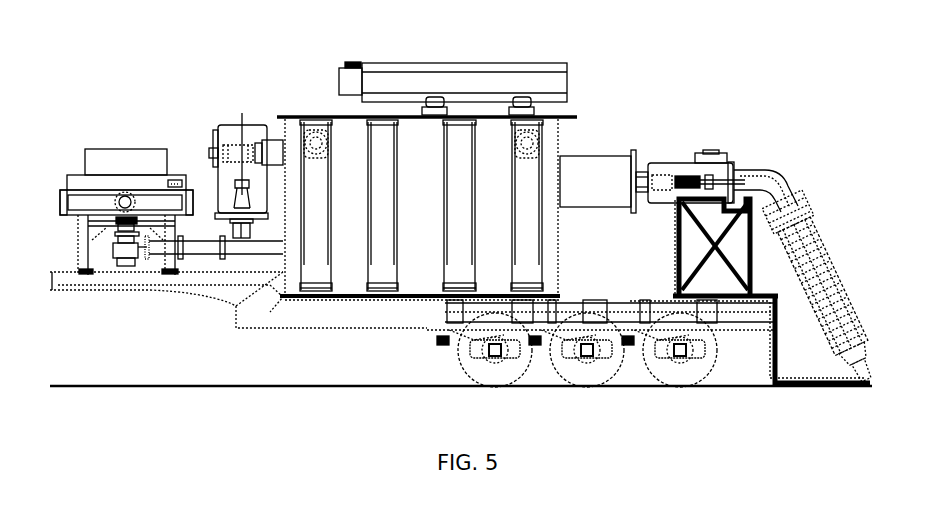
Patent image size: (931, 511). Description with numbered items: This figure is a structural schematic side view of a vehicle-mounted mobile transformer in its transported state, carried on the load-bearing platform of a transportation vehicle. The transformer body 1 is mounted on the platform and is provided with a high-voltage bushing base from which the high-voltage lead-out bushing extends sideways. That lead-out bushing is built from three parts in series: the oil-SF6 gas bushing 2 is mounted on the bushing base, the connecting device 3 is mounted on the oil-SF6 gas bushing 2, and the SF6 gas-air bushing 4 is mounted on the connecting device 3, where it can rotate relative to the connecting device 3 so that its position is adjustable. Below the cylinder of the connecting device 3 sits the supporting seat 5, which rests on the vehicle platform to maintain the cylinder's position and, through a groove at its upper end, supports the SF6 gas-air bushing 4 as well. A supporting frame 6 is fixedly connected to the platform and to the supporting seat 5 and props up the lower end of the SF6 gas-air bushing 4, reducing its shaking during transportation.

The transformer body 1 is at (566, 94).
The oil-SF6 gas bushing 2 is at (656, 183).
The connecting device 3 is at (675, 170).
The SF6 gas-air bushing 4 is at (755, 168).
The supporting seat 5 is at (755, 262).
The supporting frame 6 is at (778, 295).